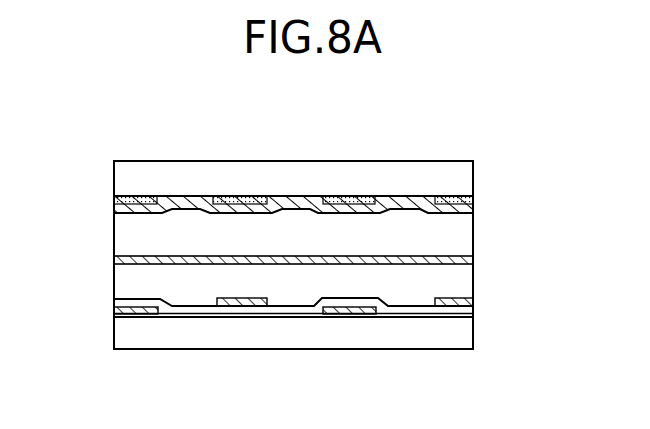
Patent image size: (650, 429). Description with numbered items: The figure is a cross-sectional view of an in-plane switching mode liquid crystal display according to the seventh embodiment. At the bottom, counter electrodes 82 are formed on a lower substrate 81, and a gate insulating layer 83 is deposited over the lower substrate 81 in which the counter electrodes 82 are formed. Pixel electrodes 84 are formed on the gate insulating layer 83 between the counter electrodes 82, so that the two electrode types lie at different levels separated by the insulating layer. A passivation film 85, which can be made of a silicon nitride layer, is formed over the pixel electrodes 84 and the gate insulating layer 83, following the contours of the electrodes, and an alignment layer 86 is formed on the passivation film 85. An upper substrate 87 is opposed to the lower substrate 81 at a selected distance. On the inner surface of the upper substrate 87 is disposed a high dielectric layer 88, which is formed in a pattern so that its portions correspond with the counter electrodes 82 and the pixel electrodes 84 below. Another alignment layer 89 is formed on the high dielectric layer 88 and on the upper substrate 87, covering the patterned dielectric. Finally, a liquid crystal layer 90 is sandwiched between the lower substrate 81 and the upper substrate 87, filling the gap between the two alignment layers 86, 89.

The lower substrate 81 is at (460, 343).
The counter electrodes 82 is at (122, 327).
The gate insulating layer 83 is at (462, 313).
The pixel electrodes 84 is at (460, 297).
The passivation film 85 is at (122, 295).
The alignment layer 86 is at (122, 278).
The upper substrate 87 is at (460, 176).
The high dielectric layer 88 is at (243, 204).
The another alignment layer 89 is at (400, 206).
The liquid crystal layer 90 is at (460, 231).